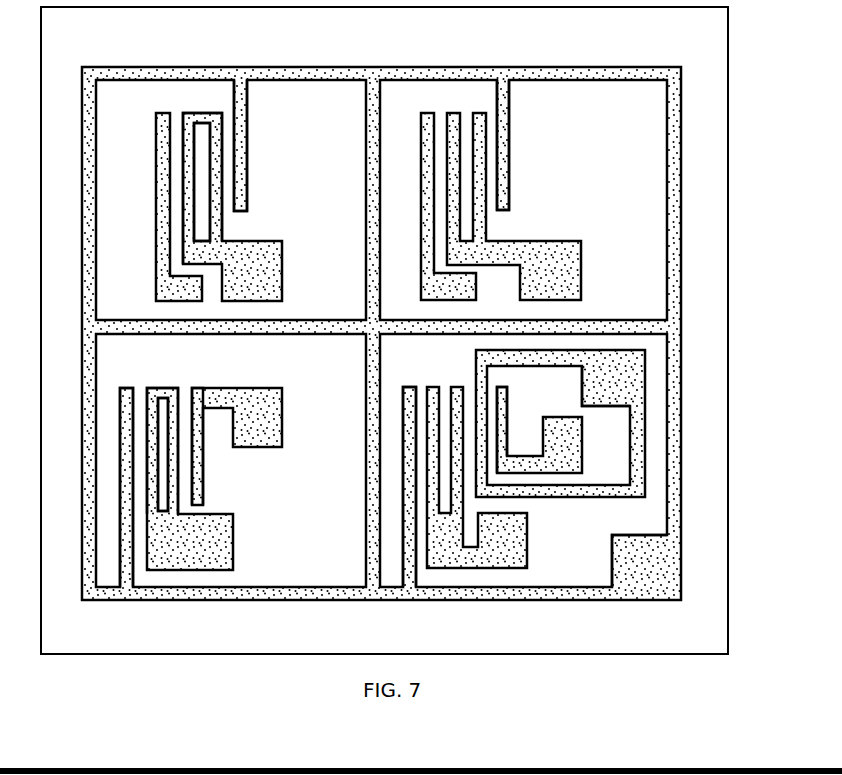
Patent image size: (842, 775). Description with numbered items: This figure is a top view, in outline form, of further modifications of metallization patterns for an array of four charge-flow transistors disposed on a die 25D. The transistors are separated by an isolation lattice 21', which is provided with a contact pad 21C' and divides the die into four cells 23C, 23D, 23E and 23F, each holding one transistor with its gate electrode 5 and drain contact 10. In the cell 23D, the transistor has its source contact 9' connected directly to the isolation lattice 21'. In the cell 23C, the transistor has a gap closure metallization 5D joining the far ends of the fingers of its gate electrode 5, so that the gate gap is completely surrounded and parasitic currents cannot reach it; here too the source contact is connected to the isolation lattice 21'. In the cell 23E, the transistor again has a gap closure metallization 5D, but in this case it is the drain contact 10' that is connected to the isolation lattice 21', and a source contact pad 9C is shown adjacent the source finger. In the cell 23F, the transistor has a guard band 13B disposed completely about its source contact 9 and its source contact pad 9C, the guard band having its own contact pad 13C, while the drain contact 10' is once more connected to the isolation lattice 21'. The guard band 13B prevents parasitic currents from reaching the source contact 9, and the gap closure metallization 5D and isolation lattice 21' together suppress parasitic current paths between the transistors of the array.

The gate electrode 5 is at (262, 280).
The gap closure metallization 5D is at (200, 113).
The source contact 9 is at (363, 446).
The source contact 9' is at (526, 145).
The finger contact pad 9C is at (269, 431).
The drain contact 10 is at (316, 207).
The drain contact 10' is at (234, 487).
The guard band 13B is at (645, 462).
The contact pad 13C is at (629, 392).
The isolation lattice 21' is at (428, 333).
The contact pad 21C' is at (705, 563).
The cell 23C is at (344, 155).
The cell 23D is at (637, 155).
The cell 23E is at (338, 418).
The cell 23F is at (589, 546).
The die 25D is at (734, 564).